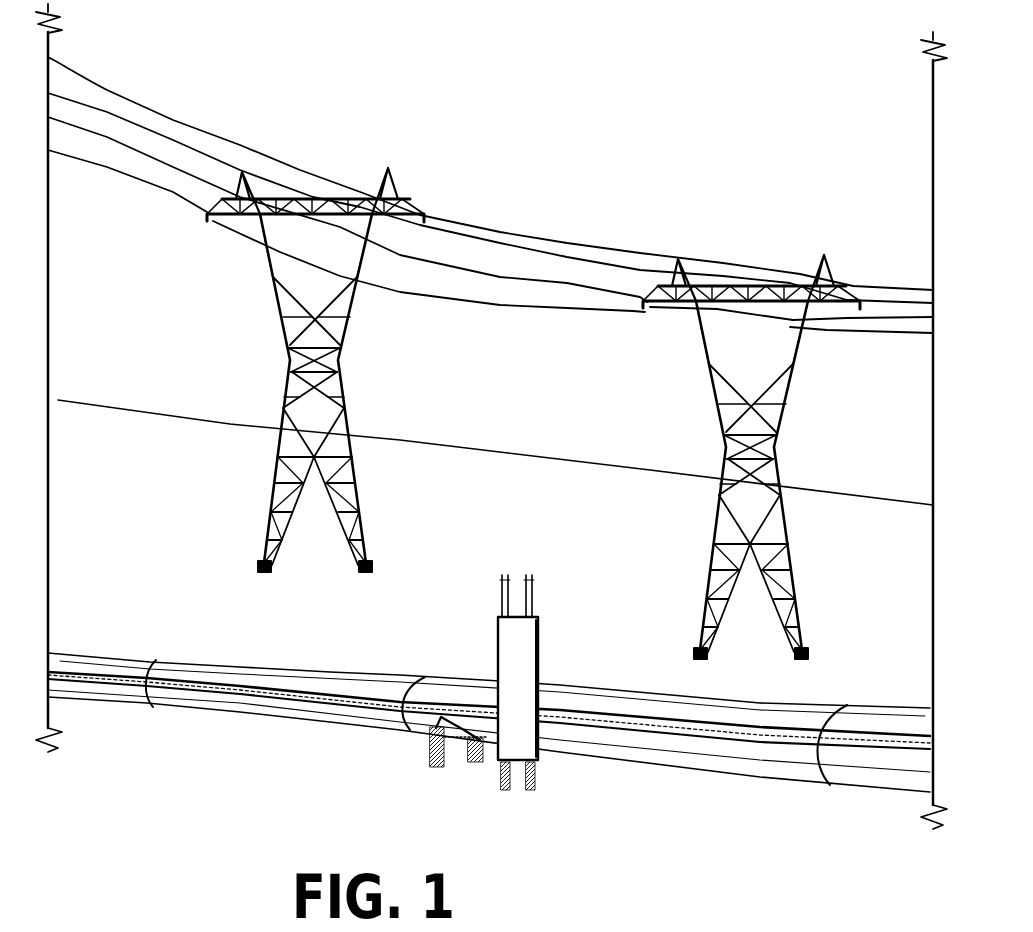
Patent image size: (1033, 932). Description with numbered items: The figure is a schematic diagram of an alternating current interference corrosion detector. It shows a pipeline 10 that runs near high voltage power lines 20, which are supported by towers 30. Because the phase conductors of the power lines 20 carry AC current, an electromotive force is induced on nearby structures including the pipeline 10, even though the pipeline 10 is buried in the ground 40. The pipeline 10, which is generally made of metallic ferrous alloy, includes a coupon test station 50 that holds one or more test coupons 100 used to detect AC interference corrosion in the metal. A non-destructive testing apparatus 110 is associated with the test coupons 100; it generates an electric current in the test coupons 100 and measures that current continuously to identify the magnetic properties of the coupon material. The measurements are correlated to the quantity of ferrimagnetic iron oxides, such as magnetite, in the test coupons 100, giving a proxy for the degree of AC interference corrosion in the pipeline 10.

The pipeline 10 is at (678, 748).
The high voltage power lines 20 is at (497, 228).
The towers 30 is at (317, 197).
The ground 40 is at (203, 768).
The coupon test station 50 is at (495, 695).
The test coupons 100 is at (527, 654).
The non-destructive testing apparatus 110 is at (428, 758).